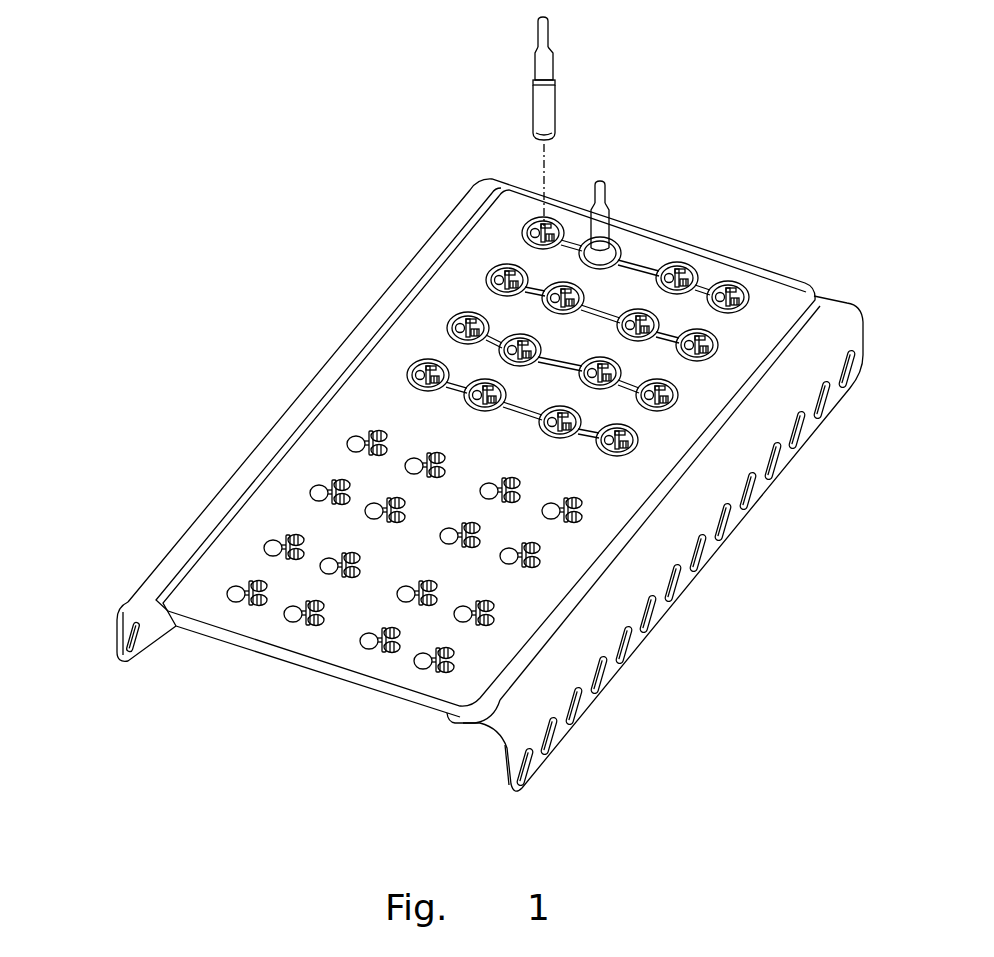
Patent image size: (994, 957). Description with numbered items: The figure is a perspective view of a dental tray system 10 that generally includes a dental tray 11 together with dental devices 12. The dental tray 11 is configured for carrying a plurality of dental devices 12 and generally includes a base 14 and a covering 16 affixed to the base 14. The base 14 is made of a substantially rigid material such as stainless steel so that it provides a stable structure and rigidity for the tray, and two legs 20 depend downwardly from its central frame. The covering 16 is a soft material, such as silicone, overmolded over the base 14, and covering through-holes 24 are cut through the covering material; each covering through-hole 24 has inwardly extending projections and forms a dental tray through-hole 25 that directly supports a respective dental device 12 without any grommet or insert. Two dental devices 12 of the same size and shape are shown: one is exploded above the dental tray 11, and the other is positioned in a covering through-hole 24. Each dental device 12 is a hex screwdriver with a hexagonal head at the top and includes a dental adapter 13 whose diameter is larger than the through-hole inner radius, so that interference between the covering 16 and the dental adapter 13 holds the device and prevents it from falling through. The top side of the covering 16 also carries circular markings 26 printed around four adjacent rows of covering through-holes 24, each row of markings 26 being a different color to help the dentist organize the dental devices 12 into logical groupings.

The dental tray system 10 is at (300, 172).
The dental tray 11 is at (426, 200).
The dental device 12 is at (536, 47).
The dental adapter 13 is at (538, 113).
The base 14 is at (843, 310).
The covering 16 is at (744, 272).
The legs 20 is at (810, 425).
The covering through-hole 24 is at (420, 366).
The dental tray through-hole 25 is at (500, 606).
The circular marking 26 is at (638, 437).